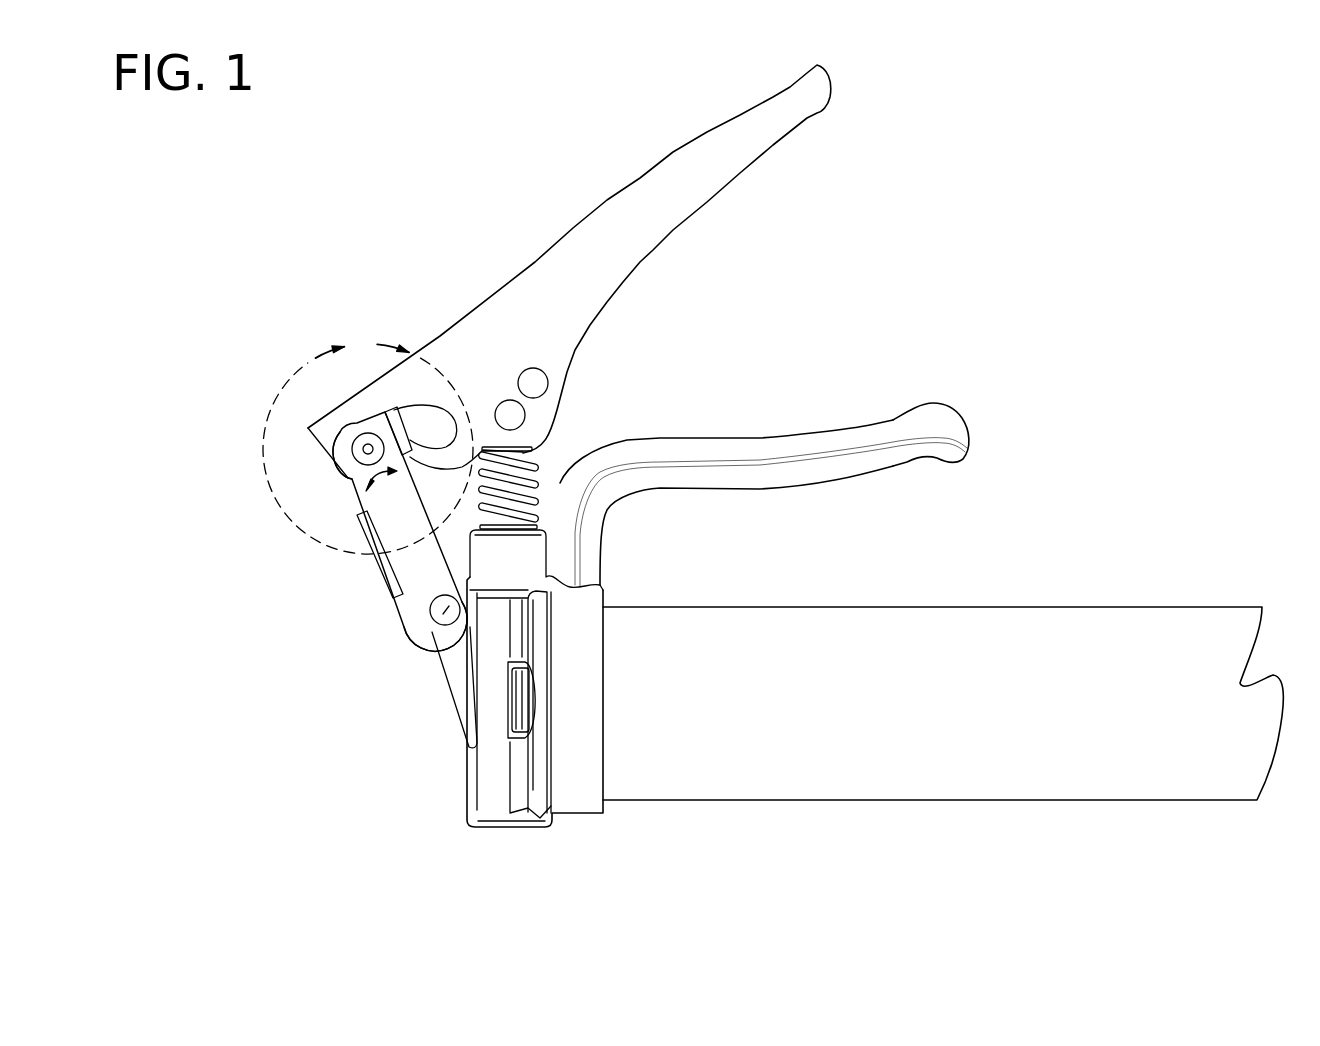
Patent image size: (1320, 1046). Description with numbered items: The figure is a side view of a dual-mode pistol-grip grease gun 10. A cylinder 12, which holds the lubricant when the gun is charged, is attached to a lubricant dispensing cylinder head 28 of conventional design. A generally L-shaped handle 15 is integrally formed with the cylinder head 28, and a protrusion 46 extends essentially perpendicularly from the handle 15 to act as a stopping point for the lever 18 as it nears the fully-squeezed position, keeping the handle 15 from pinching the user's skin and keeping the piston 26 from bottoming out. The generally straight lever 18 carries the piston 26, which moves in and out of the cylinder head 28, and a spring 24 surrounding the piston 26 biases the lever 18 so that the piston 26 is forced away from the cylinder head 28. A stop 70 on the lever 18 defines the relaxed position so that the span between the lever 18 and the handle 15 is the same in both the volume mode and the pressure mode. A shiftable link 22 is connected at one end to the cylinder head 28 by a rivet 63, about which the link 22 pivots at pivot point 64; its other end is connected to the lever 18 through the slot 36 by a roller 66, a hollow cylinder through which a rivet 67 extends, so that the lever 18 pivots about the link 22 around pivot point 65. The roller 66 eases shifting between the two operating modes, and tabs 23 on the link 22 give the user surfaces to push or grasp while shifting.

The dual-mode pistol-grip grease gun 10 is at (1246, 332).
The cylinder 12 is at (1042, 607).
The handle 15 is at (740, 437).
The lever 18 is at (522, 277).
The shiftable link 22 is at (404, 612).
The tabs 23 is at (408, 344).
The spring 24 is at (533, 493).
The piston 26 is at (541, 522).
The cylinder head 28 is at (467, 687).
The slot 36 is at (440, 420).
The protrusion 46 is at (942, 414).
The rivet 63 is at (430, 633).
The pivot point 64 is at (443, 614).
The pivot point 65 is at (355, 468).
The roller 66 is at (350, 480).
The rivet 67 is at (372, 433).
The stop 70 is at (548, 387).